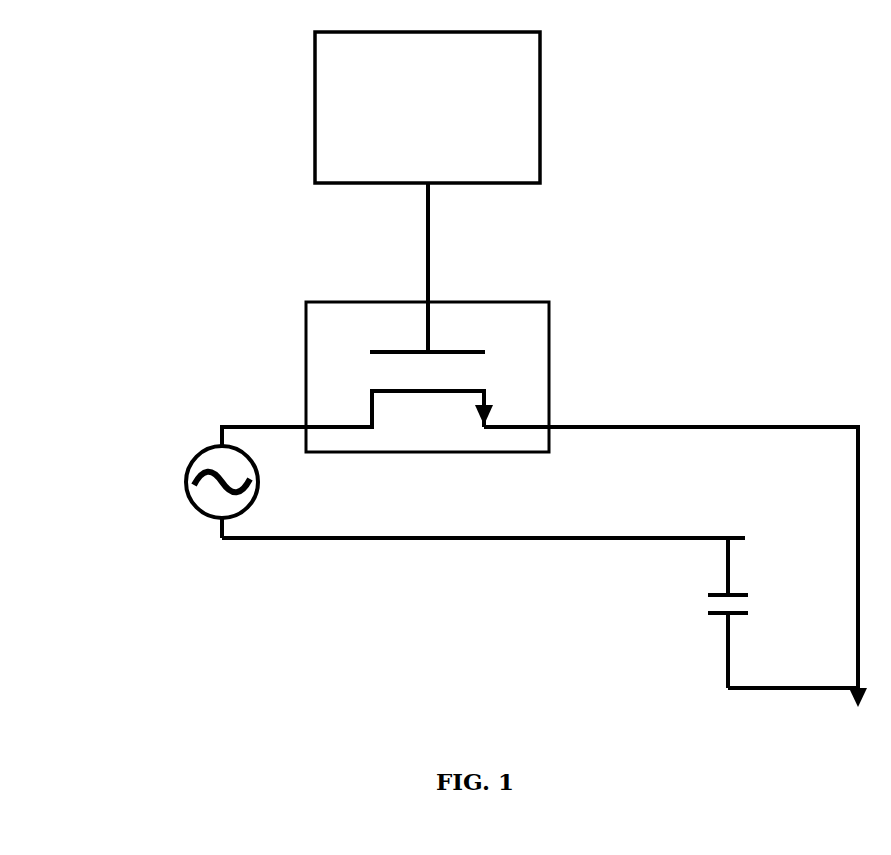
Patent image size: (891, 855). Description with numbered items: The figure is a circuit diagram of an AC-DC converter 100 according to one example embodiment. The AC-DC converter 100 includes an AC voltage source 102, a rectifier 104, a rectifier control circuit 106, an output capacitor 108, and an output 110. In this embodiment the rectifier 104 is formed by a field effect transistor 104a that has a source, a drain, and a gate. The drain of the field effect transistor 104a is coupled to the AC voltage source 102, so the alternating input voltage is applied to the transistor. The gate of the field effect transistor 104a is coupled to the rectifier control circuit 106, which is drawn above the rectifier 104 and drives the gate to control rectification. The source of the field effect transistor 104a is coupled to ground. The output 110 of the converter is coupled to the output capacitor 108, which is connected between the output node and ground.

The AC-DC converter 100 is at (838, 56).
The AC voltage source 102 is at (197, 452).
The rectifier 104 is at (478, 350).
The field effect transistor 104a is at (485, 350).
The rectifier control circuit 106 is at (540, 108).
The output capacitor 108 is at (708, 613).
The output 110 is at (745, 538).